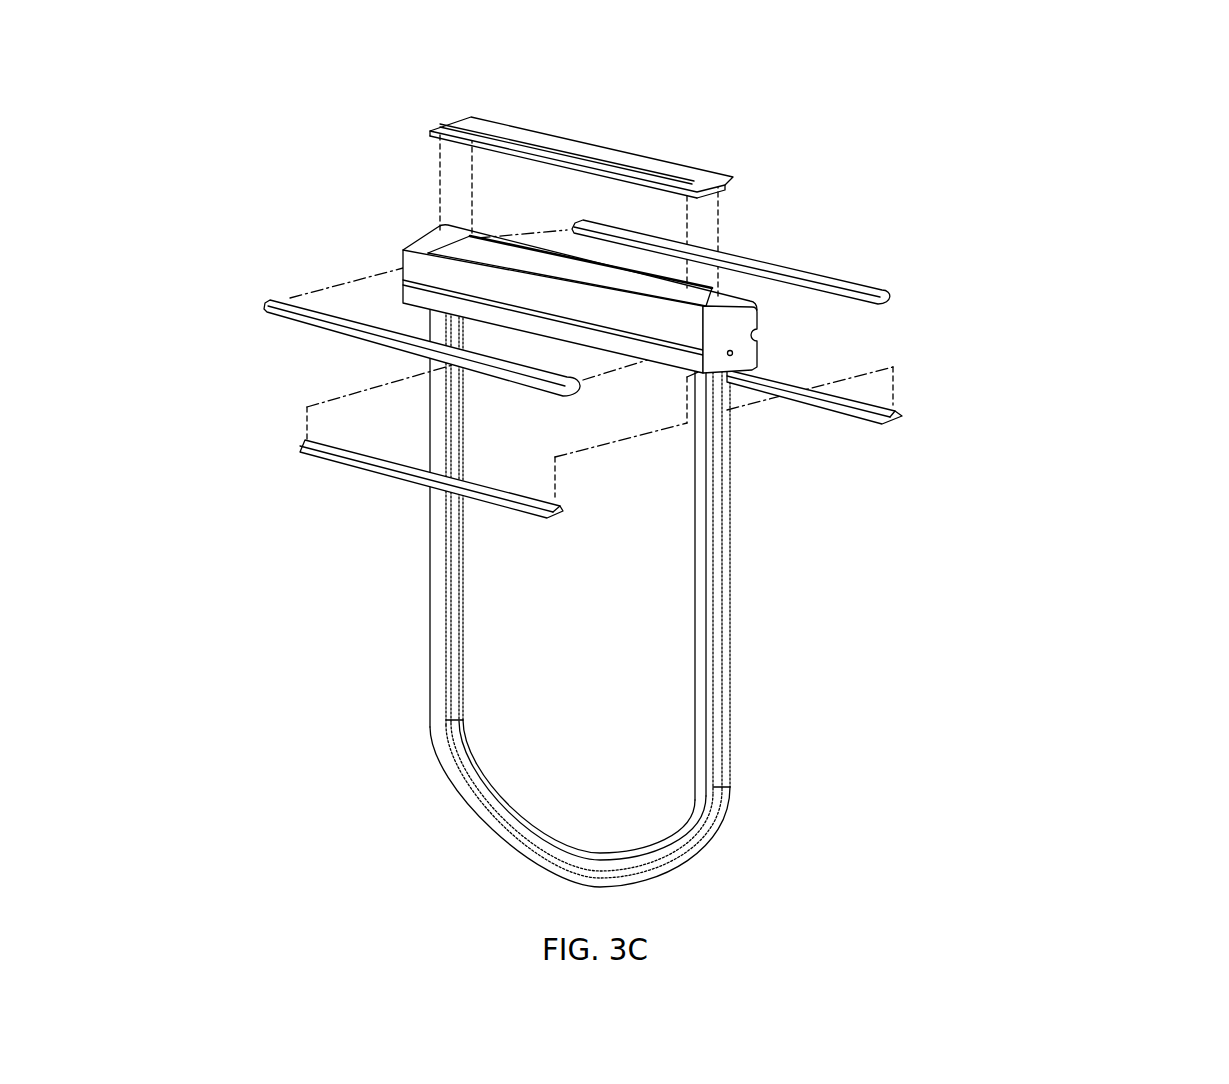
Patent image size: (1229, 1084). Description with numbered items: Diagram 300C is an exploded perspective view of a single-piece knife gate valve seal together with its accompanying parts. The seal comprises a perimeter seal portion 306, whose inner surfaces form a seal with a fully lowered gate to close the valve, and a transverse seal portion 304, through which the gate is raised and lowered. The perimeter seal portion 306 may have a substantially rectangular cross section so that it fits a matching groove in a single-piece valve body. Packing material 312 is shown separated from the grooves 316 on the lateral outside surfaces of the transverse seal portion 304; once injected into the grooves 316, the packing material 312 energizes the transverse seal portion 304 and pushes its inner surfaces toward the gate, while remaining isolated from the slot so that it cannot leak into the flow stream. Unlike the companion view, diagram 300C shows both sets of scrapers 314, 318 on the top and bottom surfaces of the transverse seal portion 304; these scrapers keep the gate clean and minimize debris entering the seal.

The diagram 300C is at (1041, 108).
The transverse seal portion 304 is at (744, 360).
The perimeter seal portion 306 is at (428, 548).
The packing material 312 is at (273, 316).
The scrapers 314 is at (471, 117).
The grooves 316 is at (405, 270).
The scrapers 318 is at (299, 452).